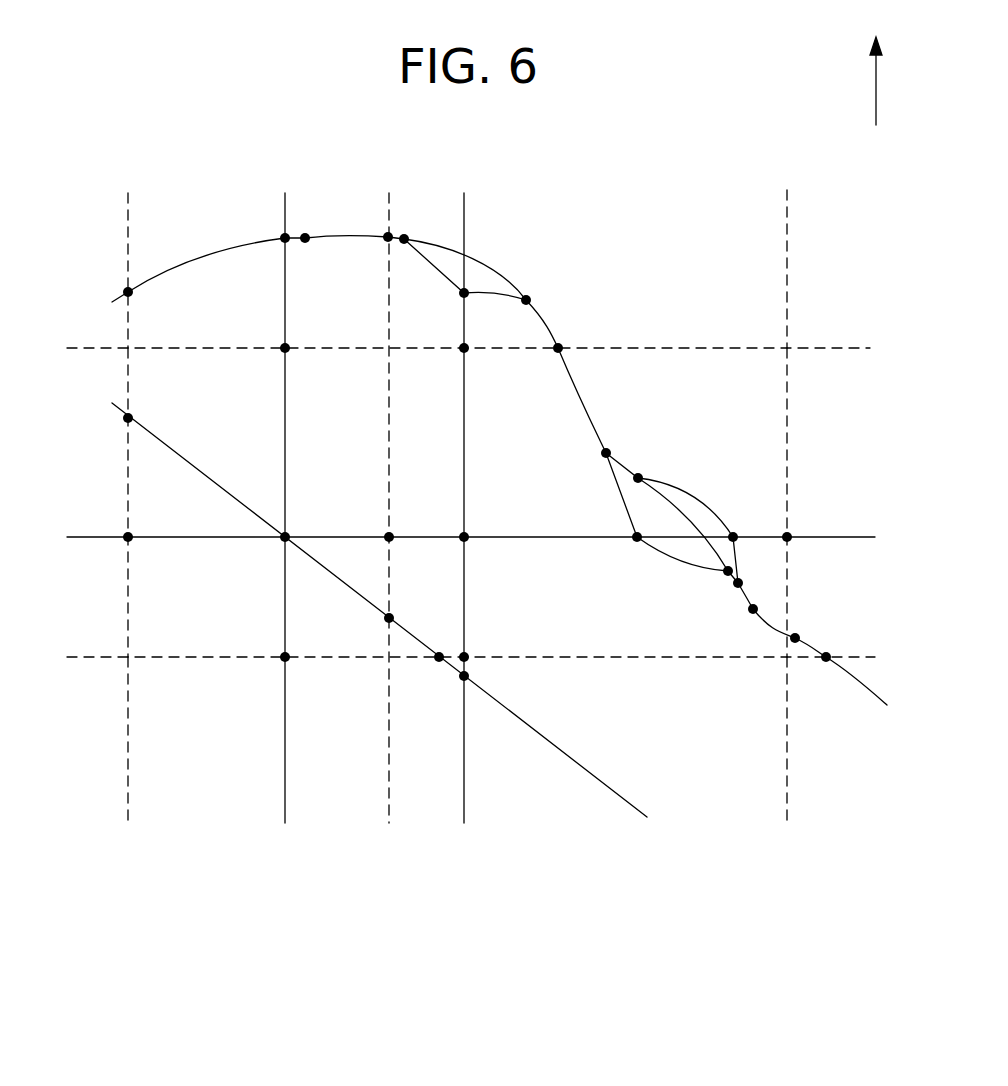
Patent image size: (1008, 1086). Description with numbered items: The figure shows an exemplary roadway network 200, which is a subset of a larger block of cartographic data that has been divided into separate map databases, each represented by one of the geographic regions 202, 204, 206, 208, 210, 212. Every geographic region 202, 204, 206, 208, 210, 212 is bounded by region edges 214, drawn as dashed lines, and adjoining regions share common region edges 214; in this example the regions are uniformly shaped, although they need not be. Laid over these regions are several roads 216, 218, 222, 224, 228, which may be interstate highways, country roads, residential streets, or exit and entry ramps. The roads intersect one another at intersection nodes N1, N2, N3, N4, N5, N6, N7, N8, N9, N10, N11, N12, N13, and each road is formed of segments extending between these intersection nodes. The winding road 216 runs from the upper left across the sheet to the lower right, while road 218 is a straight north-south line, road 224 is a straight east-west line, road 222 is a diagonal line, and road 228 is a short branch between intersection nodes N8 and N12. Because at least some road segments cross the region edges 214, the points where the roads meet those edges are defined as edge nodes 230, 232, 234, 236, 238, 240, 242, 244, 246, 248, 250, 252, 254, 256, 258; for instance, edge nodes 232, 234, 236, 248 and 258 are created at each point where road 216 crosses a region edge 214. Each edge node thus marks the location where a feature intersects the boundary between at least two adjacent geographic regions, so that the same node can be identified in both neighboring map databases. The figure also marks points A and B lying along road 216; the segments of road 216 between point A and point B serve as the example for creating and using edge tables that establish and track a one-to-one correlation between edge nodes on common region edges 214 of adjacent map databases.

The roadway network 200 is at (555, 833).
The geographic region 202 is at (775, 400).
The geographic region 204 is at (775, 788).
The geographic region 206 is at (138, 800).
The geographic region 208 is at (138, 479).
The geographic region 210 is at (135, 241).
The geographic region 212 is at (775, 270).
The region edges 214 is at (130, 193).
The road 216 is at (590, 410).
The road 218 is at (466, 432).
The road 222 is at (203, 470).
The road 224 is at (540, 540).
The road 228 is at (668, 560).
The edge node 230 is at (790, 539).
The edge node 232 is at (797, 637).
The edge node 234 is at (826, 660).
The edge node 236 is at (560, 346).
The edge node 238 is at (463, 350).
The edge node 240 is at (466, 656).
The edge node 242 is at (437, 660).
The edge node 244 is at (391, 617).
The edge node 246 is at (391, 535).
The edge node 248 is at (389, 235).
The edge node 250 is at (284, 346).
The edge node 252 is at (283, 659).
The edge node 254 is at (130, 540).
The edge node 256 is at (130, 417).
The edge node 258 is at (131, 293).
The point A is at (306, 236).
The point B is at (752, 611).
The intersection node N1 is at (288, 535).
The intersection node N2 is at (467, 676).
The intersection node N3 is at (466, 539).
The intersection node N4 is at (283, 238).
The intersection node N5 is at (462, 295).
The intersection node N6 is at (404, 242).
The intersection node N7 is at (527, 298).
The intersection node N8 is at (635, 540).
The intersection node N9 is at (640, 477).
The intersection node N10 is at (604, 455).
The intersection node N11 is at (734, 535).
The intersection node N12 is at (725, 573).
The intersection node N13 is at (740, 582).